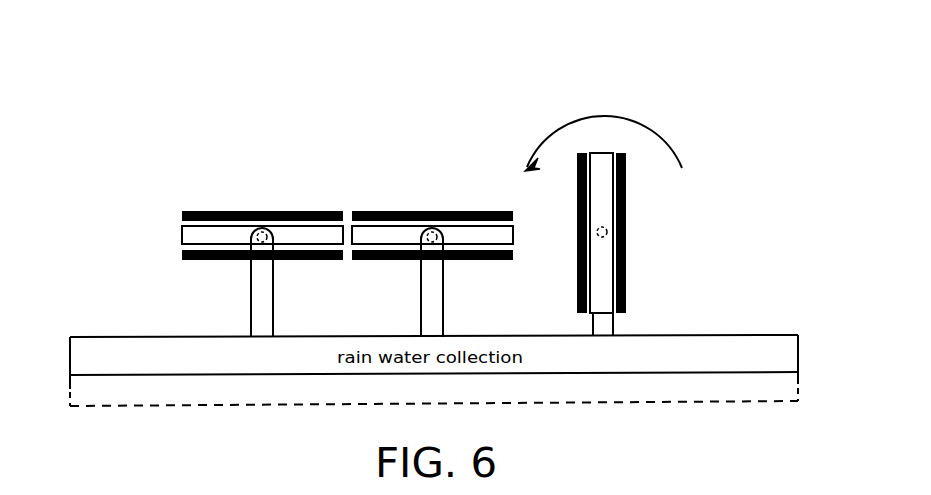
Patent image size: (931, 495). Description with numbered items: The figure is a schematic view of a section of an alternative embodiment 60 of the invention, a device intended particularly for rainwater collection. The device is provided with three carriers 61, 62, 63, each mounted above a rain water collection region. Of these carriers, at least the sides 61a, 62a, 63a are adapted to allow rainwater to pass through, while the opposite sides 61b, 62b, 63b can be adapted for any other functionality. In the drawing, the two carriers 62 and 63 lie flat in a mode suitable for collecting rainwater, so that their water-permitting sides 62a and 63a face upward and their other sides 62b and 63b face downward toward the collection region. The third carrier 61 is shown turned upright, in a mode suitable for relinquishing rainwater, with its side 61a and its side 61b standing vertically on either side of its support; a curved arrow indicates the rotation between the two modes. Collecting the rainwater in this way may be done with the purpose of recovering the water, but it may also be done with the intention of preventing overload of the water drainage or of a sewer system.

The alternative embodiment 60 is at (710, 98).
The carrier 61 is at (602, 233).
The side 61a is at (626, 283).
The side 61b is at (577, 283).
The carrier 62 is at (262, 236).
The side 62a is at (213, 211).
The side 62b is at (212, 260).
The carrier 63 is at (432, 236).
The side 63a is at (382, 211).
The side 63b is at (382, 260).